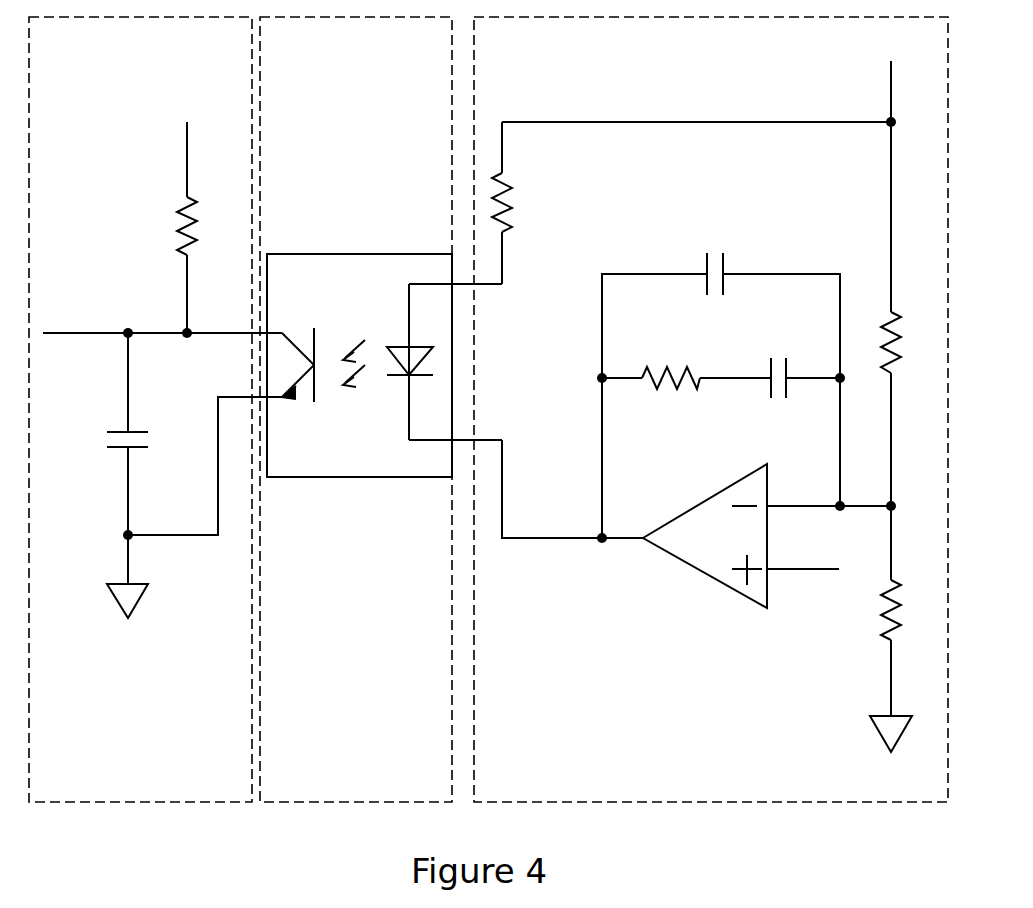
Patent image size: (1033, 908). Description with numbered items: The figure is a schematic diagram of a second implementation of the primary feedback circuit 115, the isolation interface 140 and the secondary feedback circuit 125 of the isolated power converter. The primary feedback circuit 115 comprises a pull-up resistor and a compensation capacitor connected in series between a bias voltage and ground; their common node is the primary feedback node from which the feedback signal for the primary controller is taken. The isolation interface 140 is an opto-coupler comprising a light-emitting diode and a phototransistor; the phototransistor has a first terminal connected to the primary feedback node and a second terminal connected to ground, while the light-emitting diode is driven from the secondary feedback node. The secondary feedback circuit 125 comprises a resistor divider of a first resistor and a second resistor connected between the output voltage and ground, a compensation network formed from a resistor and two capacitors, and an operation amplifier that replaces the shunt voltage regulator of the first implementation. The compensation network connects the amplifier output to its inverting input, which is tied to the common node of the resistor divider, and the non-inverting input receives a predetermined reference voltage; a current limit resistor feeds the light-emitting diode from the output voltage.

The primary feedback circuit 115 is at (122, 61).
The isolation interface 140 is at (375, 61).
The secondary feedback circuit 125 is at (725, 61).